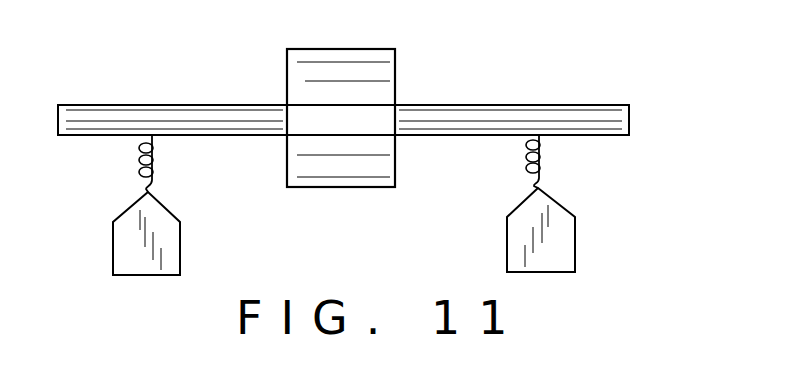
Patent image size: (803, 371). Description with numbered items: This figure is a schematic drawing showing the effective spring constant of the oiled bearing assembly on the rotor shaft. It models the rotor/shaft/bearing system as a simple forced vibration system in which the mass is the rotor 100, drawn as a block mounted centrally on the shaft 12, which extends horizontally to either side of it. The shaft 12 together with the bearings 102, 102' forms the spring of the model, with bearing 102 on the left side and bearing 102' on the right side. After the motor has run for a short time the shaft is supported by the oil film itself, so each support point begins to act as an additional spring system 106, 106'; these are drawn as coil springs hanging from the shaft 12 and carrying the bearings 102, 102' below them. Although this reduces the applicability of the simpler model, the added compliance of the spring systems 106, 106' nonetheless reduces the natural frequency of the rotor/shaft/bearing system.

The shaft 12 is at (80, 106).
The rotor 100 is at (395, 70).
The additional spring system 106 is at (193, 164).
The bearing 102 is at (180, 234).
The additional spring system 106' is at (585, 161).
The bearing 102' is at (581, 230).